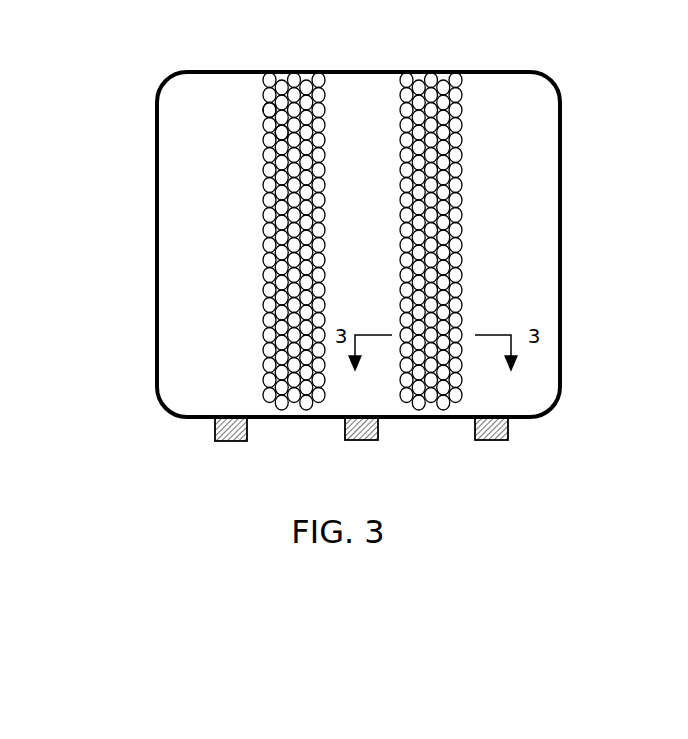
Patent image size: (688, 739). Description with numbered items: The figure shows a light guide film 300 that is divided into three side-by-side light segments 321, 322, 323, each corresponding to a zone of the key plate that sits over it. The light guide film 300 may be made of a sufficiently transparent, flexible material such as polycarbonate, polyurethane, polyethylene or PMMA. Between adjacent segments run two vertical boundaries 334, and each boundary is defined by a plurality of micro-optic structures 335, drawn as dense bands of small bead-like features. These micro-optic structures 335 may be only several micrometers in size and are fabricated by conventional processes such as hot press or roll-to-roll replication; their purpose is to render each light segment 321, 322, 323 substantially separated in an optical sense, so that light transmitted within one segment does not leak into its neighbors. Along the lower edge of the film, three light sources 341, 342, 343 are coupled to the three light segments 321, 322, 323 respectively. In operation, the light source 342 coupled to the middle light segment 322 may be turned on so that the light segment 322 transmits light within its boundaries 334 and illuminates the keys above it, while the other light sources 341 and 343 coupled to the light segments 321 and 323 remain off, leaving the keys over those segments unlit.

The light guide film 300 is at (120, 50).
The light segment 321 is at (226, 265).
The light segment 322 is at (342, 265).
The light segment 323 is at (483, 265).
The boundaries 334 is at (323, 62).
The micro-optic structures 335 is at (268, 111).
The light source 341 is at (216, 432).
The light source 342 is at (345, 432).
The light source 343 is at (475, 432).